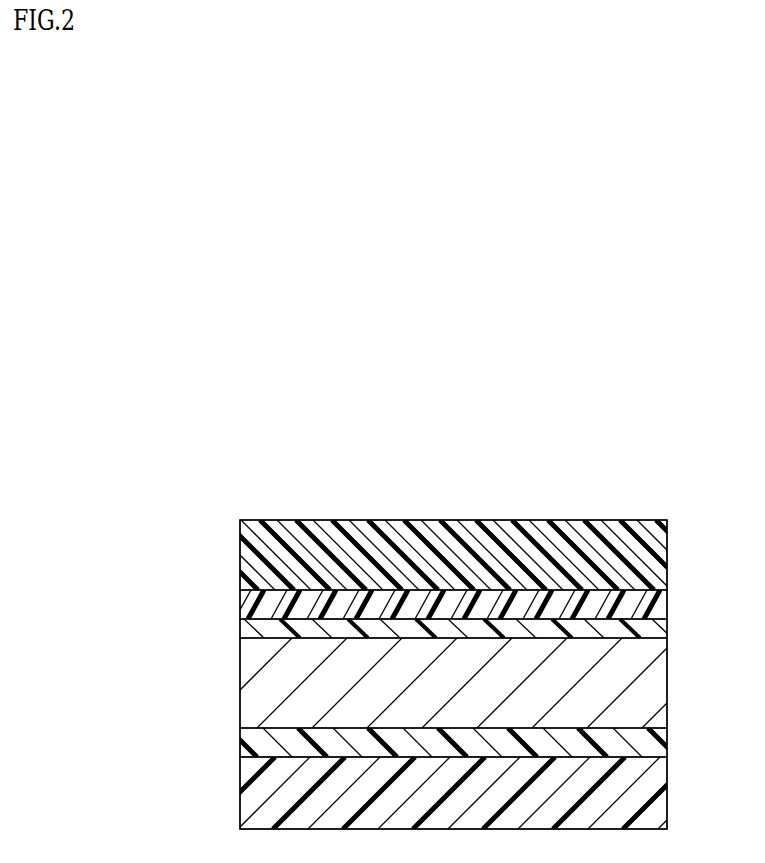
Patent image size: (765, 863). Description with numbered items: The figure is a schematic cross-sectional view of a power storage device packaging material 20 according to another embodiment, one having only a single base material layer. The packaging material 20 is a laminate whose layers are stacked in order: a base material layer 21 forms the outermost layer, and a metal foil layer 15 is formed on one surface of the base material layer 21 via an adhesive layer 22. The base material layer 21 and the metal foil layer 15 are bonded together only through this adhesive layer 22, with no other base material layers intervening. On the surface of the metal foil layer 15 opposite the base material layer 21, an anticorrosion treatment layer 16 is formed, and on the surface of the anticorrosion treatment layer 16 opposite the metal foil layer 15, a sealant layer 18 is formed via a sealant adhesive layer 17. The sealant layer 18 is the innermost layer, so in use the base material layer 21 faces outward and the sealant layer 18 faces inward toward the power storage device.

The packaging material 20 is at (638, 447).
The sealant layer 18 is at (658, 553).
The sealant adhesive layer 17 is at (658, 607).
The anticorrosion treatment layer 16 is at (658, 632).
The metal foil layer 15 is at (658, 688).
The adhesive layer 22 is at (658, 747).
The base material layer 21 is at (658, 805).